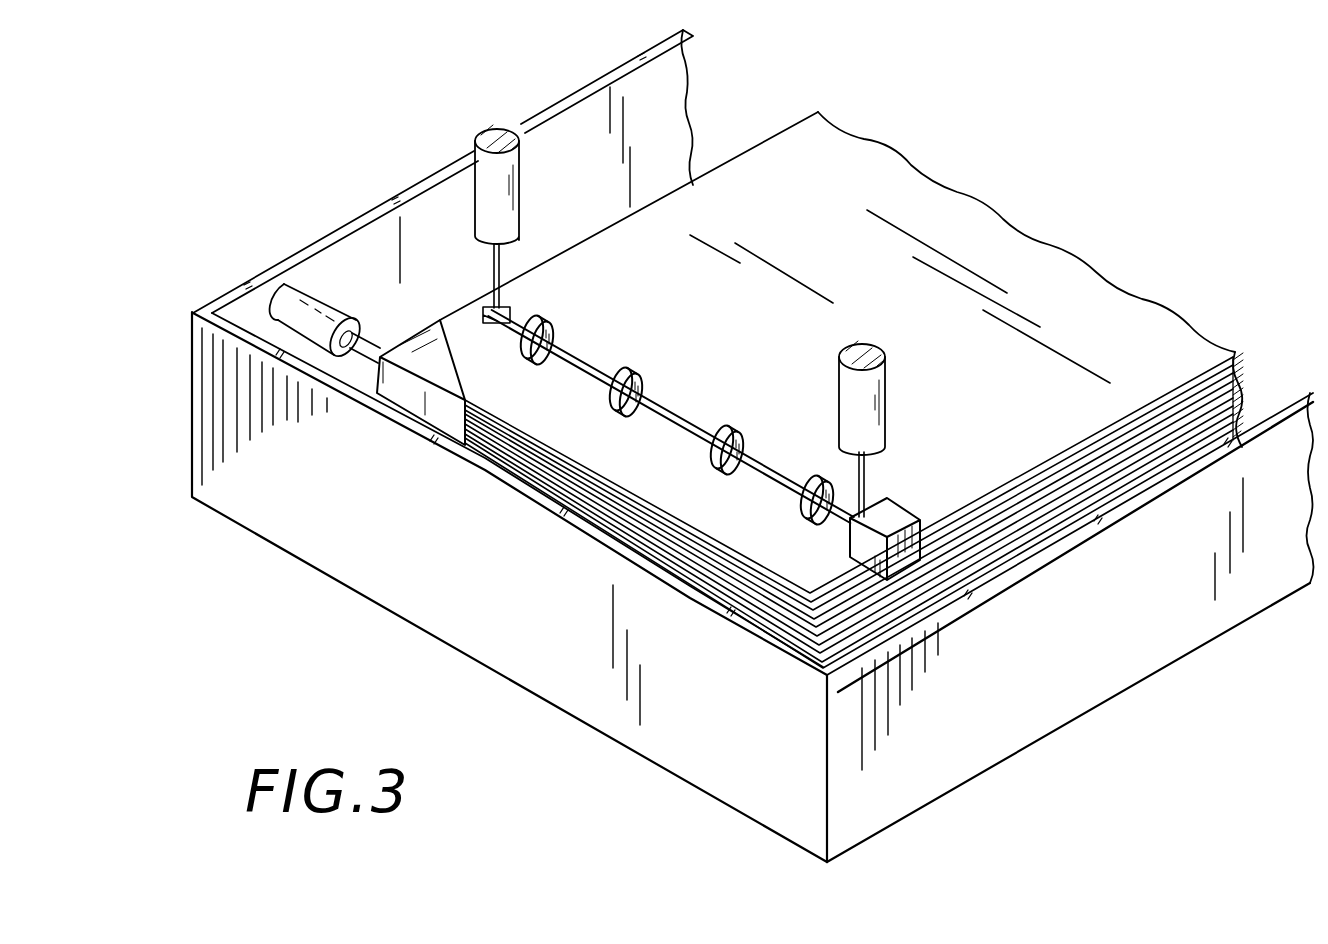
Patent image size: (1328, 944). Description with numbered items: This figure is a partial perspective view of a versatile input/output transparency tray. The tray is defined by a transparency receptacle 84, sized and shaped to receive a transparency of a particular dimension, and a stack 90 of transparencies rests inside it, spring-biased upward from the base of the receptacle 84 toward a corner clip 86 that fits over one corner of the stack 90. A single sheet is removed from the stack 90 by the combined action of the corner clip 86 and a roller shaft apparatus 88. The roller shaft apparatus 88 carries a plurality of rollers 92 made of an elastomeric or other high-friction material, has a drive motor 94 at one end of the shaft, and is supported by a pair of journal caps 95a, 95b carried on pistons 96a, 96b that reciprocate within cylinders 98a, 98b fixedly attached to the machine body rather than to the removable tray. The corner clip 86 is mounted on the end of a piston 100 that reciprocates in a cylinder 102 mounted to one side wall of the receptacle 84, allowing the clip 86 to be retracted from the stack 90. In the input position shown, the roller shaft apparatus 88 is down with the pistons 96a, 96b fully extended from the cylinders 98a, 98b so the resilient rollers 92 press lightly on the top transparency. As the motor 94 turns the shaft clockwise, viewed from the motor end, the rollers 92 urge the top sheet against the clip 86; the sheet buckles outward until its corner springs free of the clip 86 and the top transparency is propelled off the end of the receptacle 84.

The transparency receptacle 84 is at (185, 472).
The corner clip 86 is at (430, 358).
The roller shaft apparatus 88 is at (694, 451).
The stack of transparencies 90 is at (973, 197).
The rollers 92 is at (630, 368).
The drive motor 94 is at (890, 503).
The journal cap 95a is at (508, 312).
The journal cap 95b is at (848, 525).
The piston 96a is at (515, 268).
The piston 96b is at (870, 480).
The cylinder 98a is at (518, 177).
The cylinder 98b is at (885, 402).
The piston 100 is at (369, 320).
The cylinder 102 is at (293, 305).